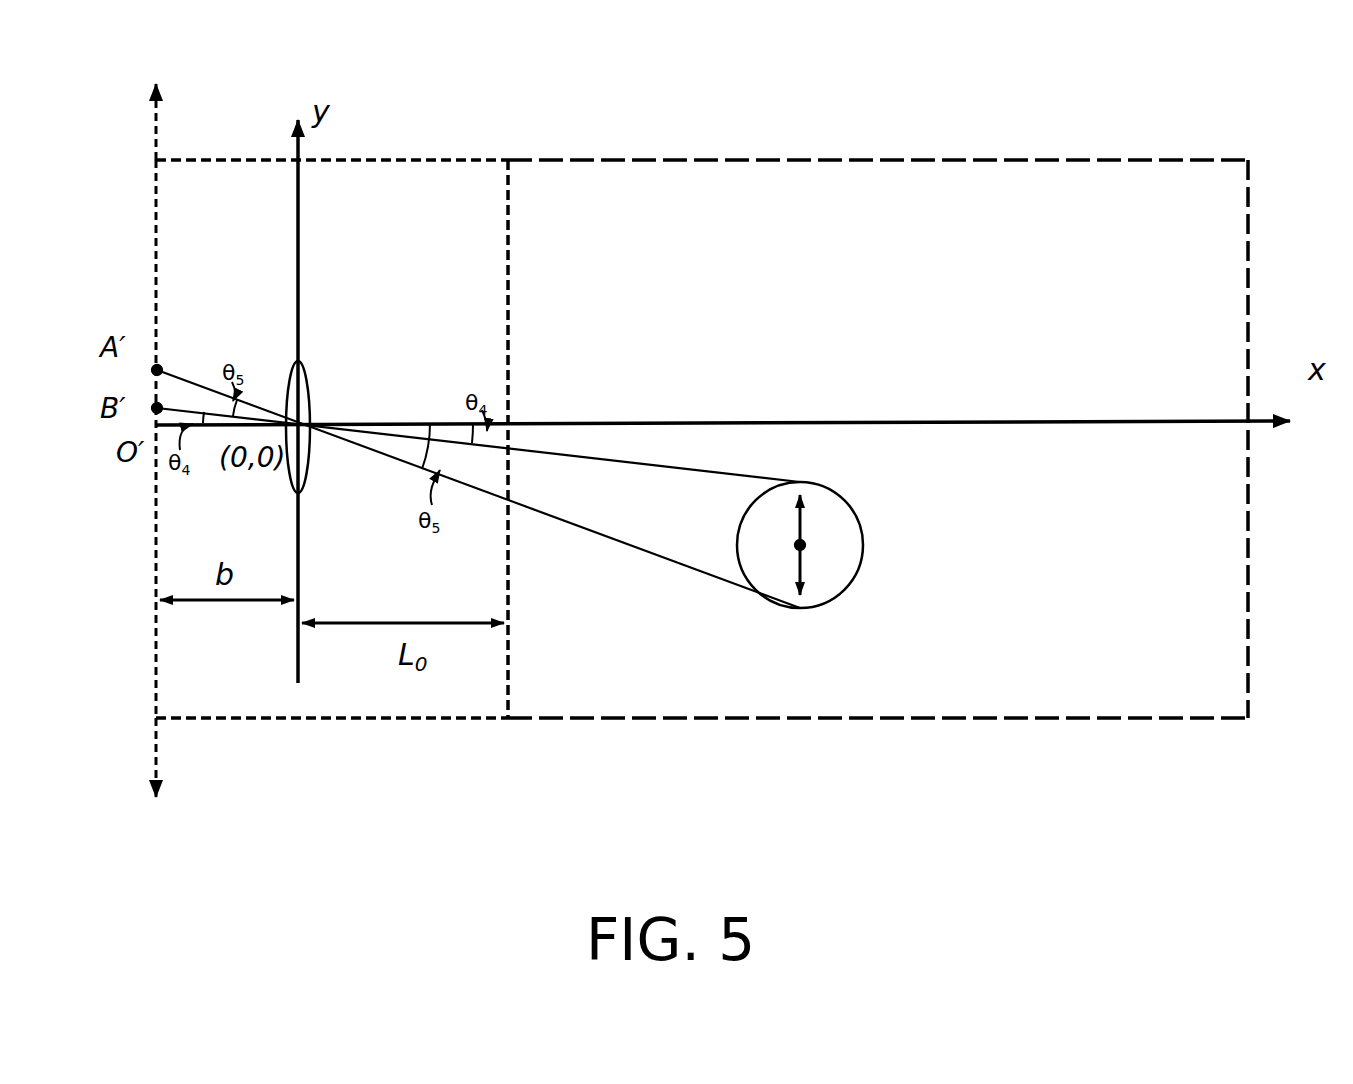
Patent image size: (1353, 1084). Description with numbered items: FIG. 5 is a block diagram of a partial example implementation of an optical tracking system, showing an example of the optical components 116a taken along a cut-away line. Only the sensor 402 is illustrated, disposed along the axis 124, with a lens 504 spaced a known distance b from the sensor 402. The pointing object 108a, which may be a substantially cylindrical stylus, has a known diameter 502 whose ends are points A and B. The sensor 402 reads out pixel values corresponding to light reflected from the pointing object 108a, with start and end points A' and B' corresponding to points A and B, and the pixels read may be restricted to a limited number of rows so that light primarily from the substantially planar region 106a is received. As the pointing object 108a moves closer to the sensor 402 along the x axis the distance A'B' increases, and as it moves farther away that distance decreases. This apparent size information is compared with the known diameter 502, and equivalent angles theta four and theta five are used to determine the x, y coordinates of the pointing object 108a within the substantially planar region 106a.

The optical components 116a is at (547, 67).
The substantially planar region 106a is at (1108, 160).
The axis 124 is at (170, 754).
The sensor 402 is at (150, 485).
The lens 504 is at (312, 402).
The diameter 502 is at (813, 568).
The pointing object 108a is at (903, 531).